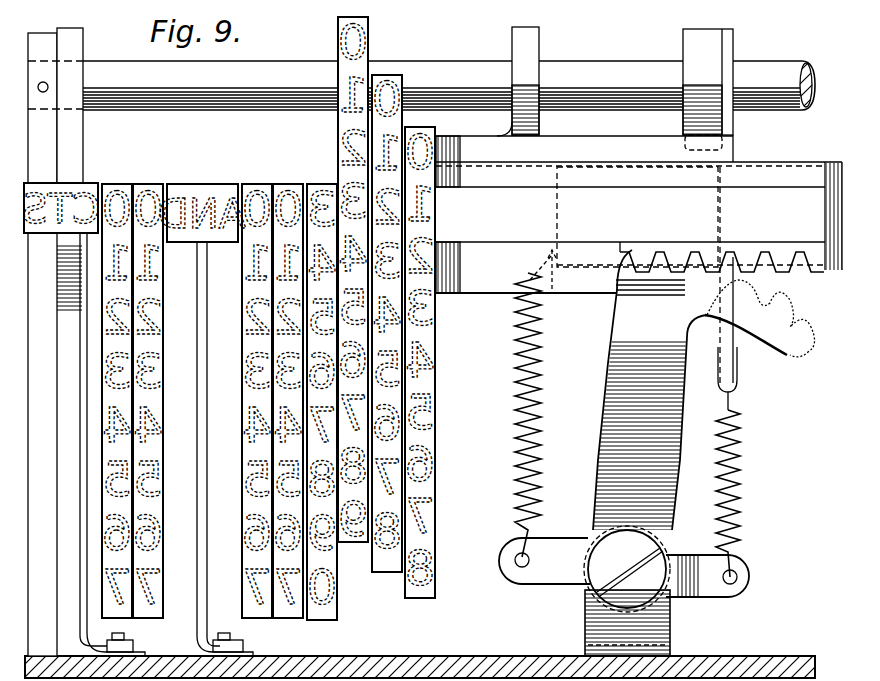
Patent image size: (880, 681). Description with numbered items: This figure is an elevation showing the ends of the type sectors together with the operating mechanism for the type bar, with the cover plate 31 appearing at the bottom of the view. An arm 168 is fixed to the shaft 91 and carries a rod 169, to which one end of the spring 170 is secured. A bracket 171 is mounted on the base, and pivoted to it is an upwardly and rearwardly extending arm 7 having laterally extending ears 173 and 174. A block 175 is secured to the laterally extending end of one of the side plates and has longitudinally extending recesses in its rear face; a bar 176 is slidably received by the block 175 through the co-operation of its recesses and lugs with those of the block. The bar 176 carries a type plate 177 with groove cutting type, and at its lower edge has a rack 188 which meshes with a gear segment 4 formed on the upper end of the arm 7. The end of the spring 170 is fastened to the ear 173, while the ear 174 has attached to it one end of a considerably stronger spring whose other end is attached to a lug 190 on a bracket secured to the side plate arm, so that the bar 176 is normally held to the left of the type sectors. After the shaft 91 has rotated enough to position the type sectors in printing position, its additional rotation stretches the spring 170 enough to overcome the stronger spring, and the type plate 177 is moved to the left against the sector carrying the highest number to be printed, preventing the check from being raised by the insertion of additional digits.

The shaft 91 is at (445, 61).
The block 175 is at (591, 148).
The arm 168 is at (735, 127).
The bar 176 is at (768, 176).
The rack 188 is at (788, 270).
The gear segment 4 is at (790, 352).
The rod 169 is at (740, 388).
The arm 7 is at (600, 385).
The spring 170 is at (743, 480).
The ear 174 is at (547, 572).
The ear 173 is at (745, 585).
The bracket 171 is at (660, 628).
The cover plate 31 is at (783, 648).
The type plate 177 is at (462, 240).
The lug 190 is at (519, 270).